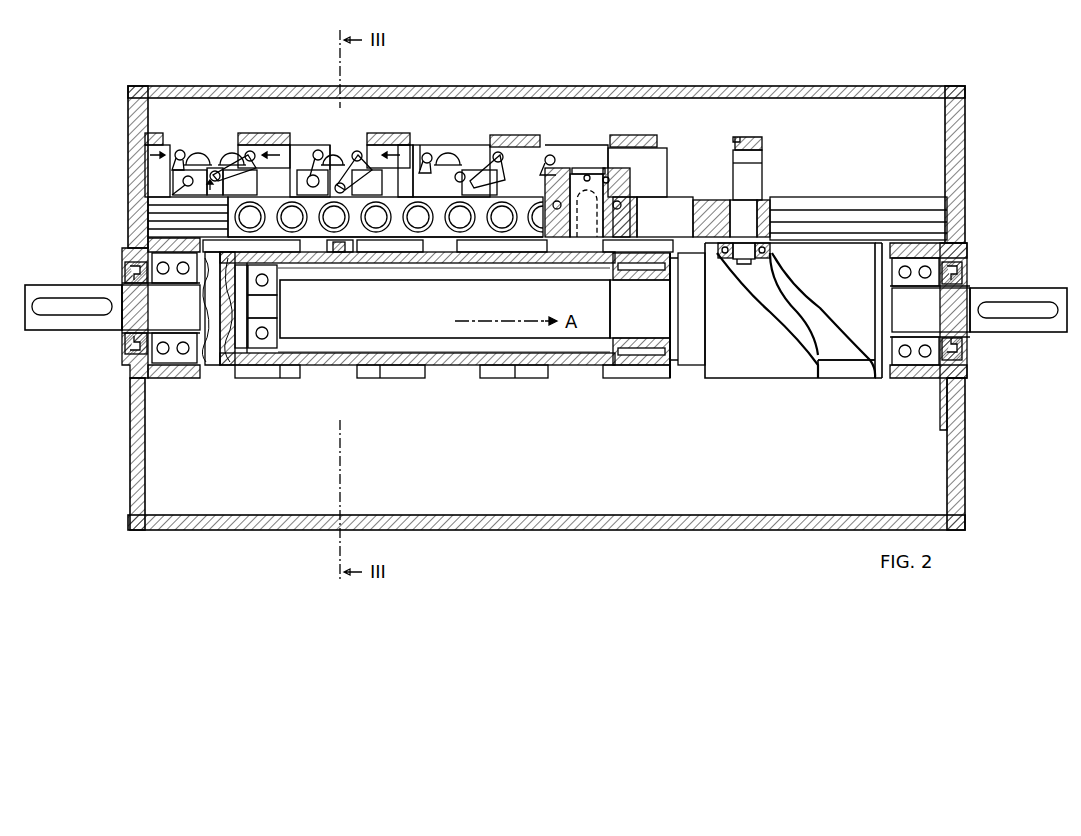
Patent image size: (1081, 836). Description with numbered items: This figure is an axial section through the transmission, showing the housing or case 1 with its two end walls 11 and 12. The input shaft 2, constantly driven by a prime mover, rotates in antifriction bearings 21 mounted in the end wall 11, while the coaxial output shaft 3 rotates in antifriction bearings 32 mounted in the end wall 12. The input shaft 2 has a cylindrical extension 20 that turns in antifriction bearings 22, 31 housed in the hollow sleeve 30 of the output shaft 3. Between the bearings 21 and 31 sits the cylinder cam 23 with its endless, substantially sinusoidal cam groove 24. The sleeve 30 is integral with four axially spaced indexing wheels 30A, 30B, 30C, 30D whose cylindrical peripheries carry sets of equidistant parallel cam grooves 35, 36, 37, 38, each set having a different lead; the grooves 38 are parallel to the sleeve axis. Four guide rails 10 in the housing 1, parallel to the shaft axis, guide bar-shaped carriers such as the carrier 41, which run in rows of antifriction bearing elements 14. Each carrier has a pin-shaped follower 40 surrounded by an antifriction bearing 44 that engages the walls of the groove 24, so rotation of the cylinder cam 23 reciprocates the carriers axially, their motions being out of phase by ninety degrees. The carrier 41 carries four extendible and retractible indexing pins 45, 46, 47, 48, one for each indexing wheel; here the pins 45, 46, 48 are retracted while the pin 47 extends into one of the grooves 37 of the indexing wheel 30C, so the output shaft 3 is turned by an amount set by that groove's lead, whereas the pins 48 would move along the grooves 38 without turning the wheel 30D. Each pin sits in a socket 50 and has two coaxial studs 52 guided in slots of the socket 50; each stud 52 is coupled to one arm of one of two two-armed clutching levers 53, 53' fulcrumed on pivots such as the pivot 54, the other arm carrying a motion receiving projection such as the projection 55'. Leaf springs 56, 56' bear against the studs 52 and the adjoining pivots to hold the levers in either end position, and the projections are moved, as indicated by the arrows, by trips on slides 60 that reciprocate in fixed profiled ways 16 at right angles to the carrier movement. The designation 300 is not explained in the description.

The housing 1 is at (487, 518).
The input shaft 2 is at (1024, 300).
The output shaft 3 is at (60, 297).
The guide rail 10 is at (150, 211).
The end wall 11 is at (962, 159).
The end wall 12 is at (147, 144).
The antifriction bearing elements 14 is at (517, 230).
The profiled ways 16 is at (266, 146).
The cylindrical extension 20 is at (383, 321).
The antifriction bearings 21 is at (918, 360).
The antifriction bearing 22 is at (262, 348).
The cylinder cam 23 is at (737, 350).
The endless cam groove 24 is at (844, 362).
The sleeve 30 is at (432, 362).
The indexing wheel 30A is at (616, 380).
The indexing wheel 30B is at (491, 380).
The indexing wheel 30C is at (366, 380).
The indexing wheel 30D is at (248, 380).
The antifriction bearing 31 is at (632, 352).
The antifriction bearings 32 is at (176, 358).
The cam grooves 35 is at (667, 374).
The cam grooves 36 is at (514, 375).
The cam grooves 37 is at (378, 375).
The cam grooves 38 is at (294, 375).
The follower 40 is at (747, 256).
The carrier 41 is at (706, 206).
The antifriction bearing 44 is at (772, 251).
The indexing pin 45 is at (580, 242).
The indexing pin 46 is at (453, 233).
The indexing pin 47 is at (339, 252).
The indexing pin 48 is at (214, 170).
The socket 50 is at (378, 181).
The stud 52 is at (257, 176).
The clutching lever 53 is at (450, 153).
The clutching lever 53' is at (492, 160).
The pivot 54 is at (317, 150).
The motion receiving projection 55' is at (302, 141).
The leaf spring 56 is at (326, 137).
The leaf spring 56' is at (232, 137).
The slide 60 is at (358, 150).
The drum gap 300 is at (217, 368).